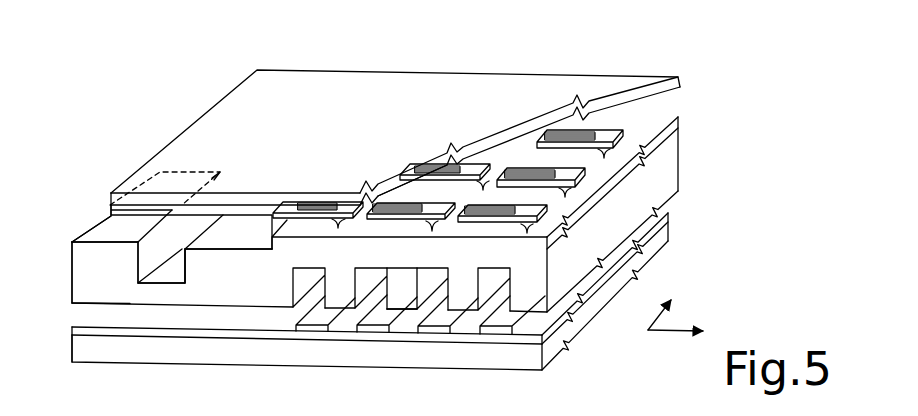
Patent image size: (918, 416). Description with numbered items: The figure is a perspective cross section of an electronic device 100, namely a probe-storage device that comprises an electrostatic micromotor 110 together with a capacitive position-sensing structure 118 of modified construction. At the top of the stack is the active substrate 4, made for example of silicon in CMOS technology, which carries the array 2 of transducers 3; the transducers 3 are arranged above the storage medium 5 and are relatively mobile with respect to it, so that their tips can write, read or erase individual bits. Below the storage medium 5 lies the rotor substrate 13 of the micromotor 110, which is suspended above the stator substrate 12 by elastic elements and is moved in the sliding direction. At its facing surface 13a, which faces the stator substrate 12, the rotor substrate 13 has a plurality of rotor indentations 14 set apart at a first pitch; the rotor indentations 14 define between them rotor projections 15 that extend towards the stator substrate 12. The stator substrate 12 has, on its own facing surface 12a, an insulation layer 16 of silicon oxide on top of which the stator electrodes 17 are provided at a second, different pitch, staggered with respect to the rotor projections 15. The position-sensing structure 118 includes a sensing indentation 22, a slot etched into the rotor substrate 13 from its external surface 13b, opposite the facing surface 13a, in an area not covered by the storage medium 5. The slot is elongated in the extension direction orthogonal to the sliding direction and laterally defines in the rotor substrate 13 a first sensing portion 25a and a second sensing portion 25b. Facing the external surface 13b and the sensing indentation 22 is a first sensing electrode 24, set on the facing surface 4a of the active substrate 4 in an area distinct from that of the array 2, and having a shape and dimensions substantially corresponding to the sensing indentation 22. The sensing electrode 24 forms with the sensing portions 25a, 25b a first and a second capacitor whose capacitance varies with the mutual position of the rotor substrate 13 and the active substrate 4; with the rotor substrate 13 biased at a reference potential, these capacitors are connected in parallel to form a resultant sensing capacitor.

The electronic device 100 is at (745, 104).
The electrostatic micromotor 110 is at (608, 320).
The position-sensing structure 118 is at (73, 206).
The active substrate 4 is at (615, 82).
The facing surface of the active substrate 4a is at (676, 94).
The first sensing electrode 24 is at (110, 203).
The array of transducers 2 is at (636, 130).
The storage medium 5 is at (677, 123).
The transducers 3 is at (585, 186).
The rotor substrate 13 is at (675, 167).
The facing surface of the rotor substrate 13a is at (78, 306).
The external surface of the rotor substrate 13b is at (95, 229).
The first sensing portion 25a is at (95, 278).
The second sensing portion 25b is at (235, 285).
The sensing indentation 22 is at (147, 279).
The rotor projections 15 is at (400, 298).
The rotor indentations 14 is at (421, 292).
The stator electrodes 17 is at (507, 335).
The insulation layer 16 is at (670, 213).
The stator substrate 12 is at (663, 240).
The facing surface of the stator substrate 12a is at (86, 329).